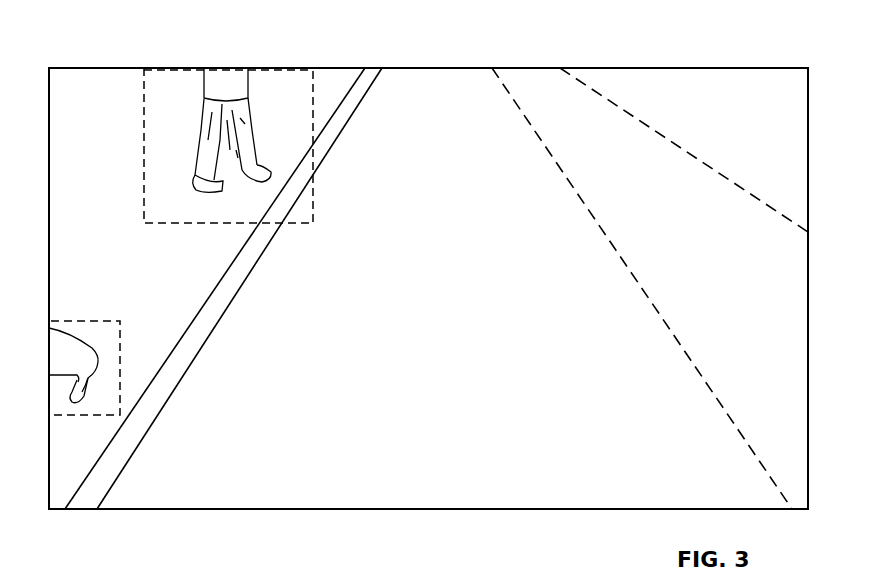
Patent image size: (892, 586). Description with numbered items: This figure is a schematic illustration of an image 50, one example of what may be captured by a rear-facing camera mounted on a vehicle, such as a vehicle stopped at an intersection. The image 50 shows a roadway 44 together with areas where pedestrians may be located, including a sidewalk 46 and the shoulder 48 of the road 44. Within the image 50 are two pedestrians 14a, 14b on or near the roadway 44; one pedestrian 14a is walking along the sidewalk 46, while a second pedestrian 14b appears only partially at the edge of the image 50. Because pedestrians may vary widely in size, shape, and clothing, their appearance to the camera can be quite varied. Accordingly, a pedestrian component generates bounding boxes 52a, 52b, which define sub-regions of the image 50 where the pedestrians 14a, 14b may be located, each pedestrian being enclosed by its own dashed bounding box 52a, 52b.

The image 50 is at (646, 66).
The roadway 44 is at (438, 315).
The sidewalk 46 is at (177, 268).
The shoulder 48 is at (355, 110).
The pedestrian 14a is at (184, 133).
The pedestrian 14b is at (85, 336).
The bounding box 52a is at (143, 176).
The bounding box 52b is at (123, 331).